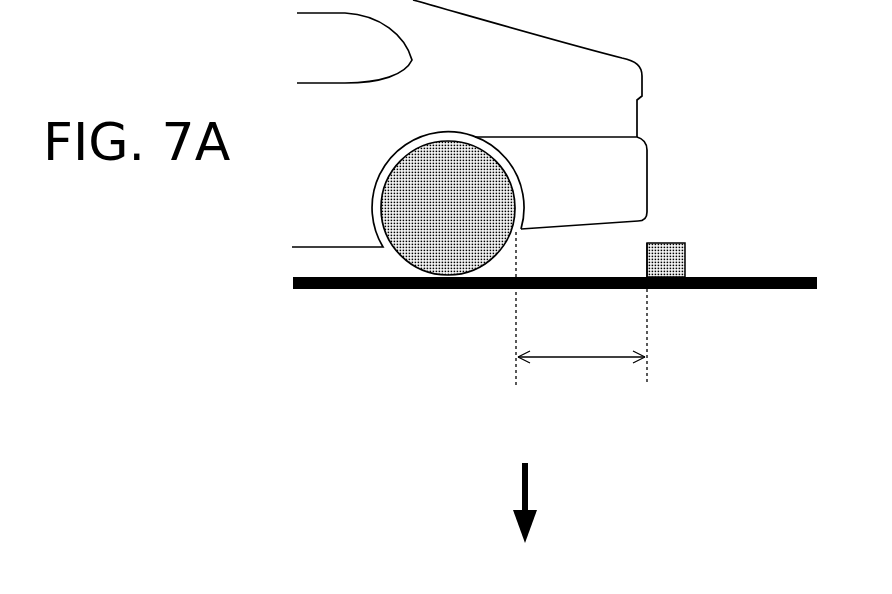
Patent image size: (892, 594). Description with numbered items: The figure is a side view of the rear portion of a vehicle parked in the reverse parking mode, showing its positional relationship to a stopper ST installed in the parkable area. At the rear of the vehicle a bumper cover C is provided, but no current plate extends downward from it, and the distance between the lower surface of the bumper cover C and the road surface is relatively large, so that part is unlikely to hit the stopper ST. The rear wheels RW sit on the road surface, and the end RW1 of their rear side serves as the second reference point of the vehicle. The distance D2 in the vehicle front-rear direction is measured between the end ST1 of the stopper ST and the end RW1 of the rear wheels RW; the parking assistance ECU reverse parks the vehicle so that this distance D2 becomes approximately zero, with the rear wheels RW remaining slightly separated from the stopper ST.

The bumper cover C is at (628, 183).
The end of the rear side of the rear wheels RW1 is at (522, 217).
The rear wheels RW is at (418, 289).
The stopper ST is at (672, 254).
The end of the stopper ST1 is at (648, 257).
The distance between the end ST1 and the end RW1 D2 is at (581, 308).